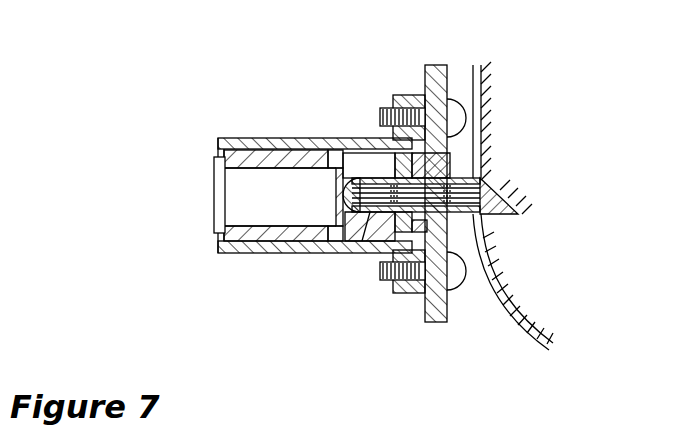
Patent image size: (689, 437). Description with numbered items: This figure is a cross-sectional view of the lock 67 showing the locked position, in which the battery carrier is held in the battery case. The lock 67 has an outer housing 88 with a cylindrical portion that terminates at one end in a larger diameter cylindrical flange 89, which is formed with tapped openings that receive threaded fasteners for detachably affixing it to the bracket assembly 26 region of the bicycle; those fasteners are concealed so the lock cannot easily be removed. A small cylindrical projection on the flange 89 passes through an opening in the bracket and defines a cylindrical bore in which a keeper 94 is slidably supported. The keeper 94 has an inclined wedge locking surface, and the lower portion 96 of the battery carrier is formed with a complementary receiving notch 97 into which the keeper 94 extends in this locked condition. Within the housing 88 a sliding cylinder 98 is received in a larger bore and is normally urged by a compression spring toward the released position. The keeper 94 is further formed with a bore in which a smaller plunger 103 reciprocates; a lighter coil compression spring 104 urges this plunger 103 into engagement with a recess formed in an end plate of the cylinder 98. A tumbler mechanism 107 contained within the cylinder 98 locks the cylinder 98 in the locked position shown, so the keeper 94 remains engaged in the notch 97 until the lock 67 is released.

The lock 67 is at (267, 175).
The outer housing 88 is at (333, 137).
The cylindrical flange 89 is at (412, 95).
The keeper 94 is at (470, 173).
The lower portion of battery carrier 96 is at (507, 323).
The receiving notch 97 is at (508, 198).
The sliding cylinder 98 is at (257, 243).
The smaller plunger 103 is at (345, 222).
The coil compression spring 104 is at (377, 213).
The tumbler mechanism 107 is at (217, 193).
The bracket assembly 26 is at (428, 316).